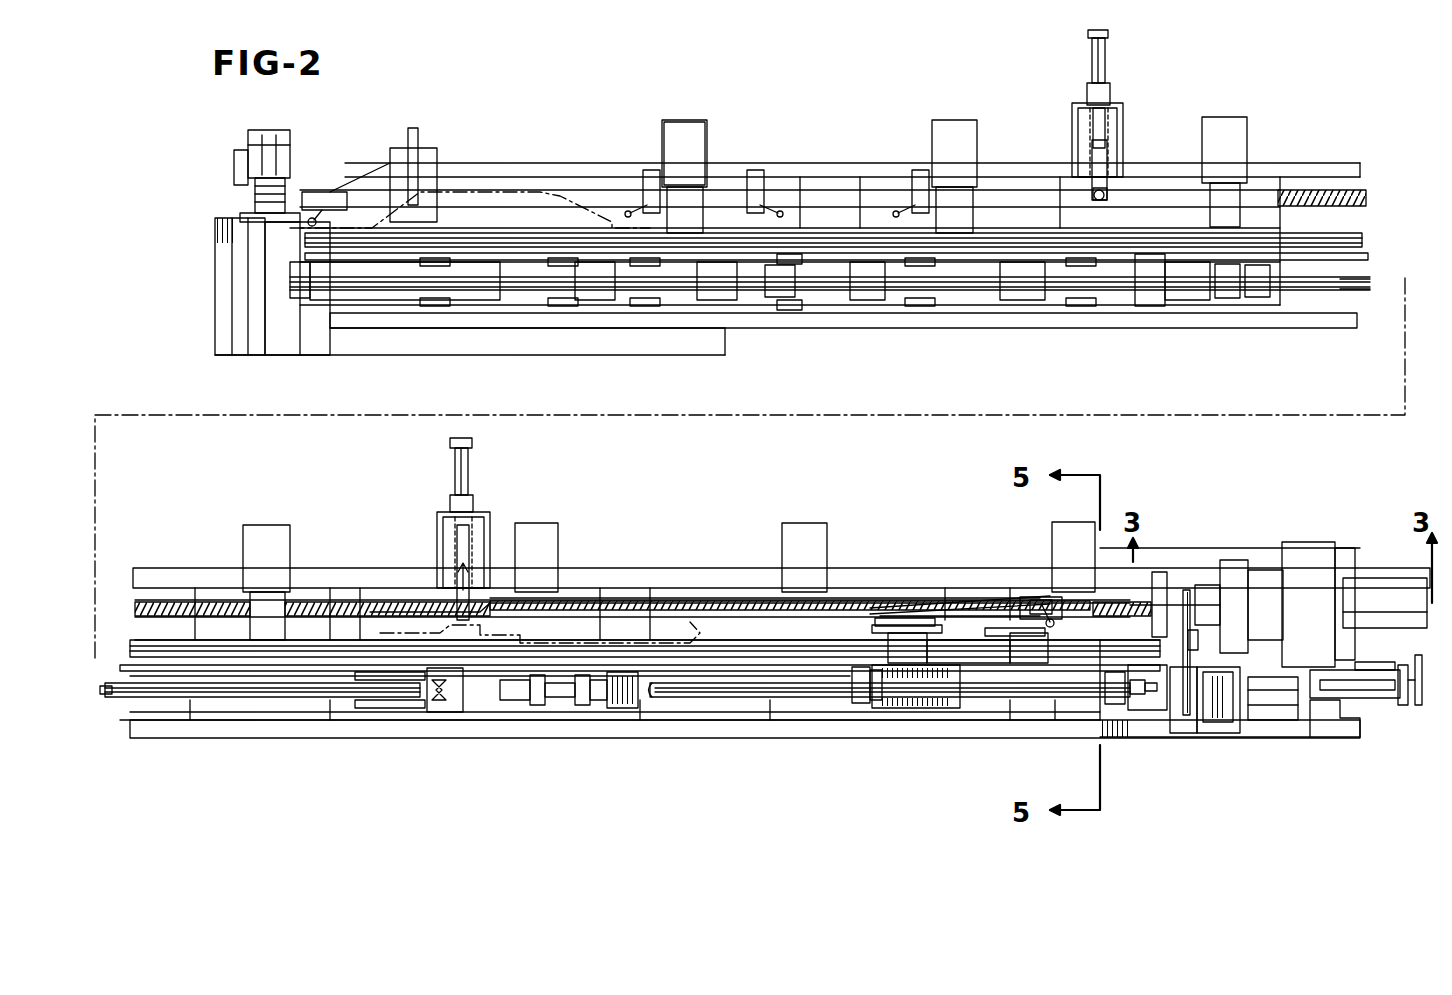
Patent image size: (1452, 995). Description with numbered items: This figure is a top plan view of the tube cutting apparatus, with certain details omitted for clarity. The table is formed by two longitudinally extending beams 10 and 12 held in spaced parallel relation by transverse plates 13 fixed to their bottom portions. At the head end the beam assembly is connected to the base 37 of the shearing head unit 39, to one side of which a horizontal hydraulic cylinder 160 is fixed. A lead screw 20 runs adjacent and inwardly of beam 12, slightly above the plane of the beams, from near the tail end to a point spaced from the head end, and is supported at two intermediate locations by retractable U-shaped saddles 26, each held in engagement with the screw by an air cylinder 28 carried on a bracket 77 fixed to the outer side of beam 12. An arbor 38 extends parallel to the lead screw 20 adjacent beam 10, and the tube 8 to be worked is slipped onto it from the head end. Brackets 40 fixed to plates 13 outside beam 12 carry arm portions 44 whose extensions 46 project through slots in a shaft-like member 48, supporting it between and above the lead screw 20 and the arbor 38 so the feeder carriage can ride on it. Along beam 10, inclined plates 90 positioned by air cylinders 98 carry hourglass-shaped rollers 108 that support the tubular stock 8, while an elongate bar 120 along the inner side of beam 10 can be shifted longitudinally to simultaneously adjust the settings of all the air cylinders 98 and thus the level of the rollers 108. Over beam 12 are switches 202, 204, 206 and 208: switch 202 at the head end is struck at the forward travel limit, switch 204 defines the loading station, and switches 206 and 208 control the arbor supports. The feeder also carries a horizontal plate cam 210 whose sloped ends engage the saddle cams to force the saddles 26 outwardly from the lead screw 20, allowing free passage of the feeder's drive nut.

The tube 8 is at (1355, 290).
The beam 10 is at (1333, 328).
The beam 12 is at (1333, 165).
The plates 13 is at (838, 190).
The lead screw 20 is at (1366, 190).
The saddle member 26 is at (1108, 198).
The air cylinder 28 is at (1092, 58).
The base 37 is at (310, 345).
The arbor 38 is at (1372, 282).
The shearing head unit 39 is at (243, 273).
The bracket 40 is at (676, 118).
The arm portion 44 is at (694, 155).
The bar-like extension 46 is at (694, 217).
The shaft-like member 48 is at (1362, 237).
The bracket 77 is at (1116, 126).
The plate 90 is at (1108, 300).
The air cylinder 98 is at (1200, 300).
The roller 108 is at (1078, 300).
The bar element 120 is at (1368, 257).
The hydraulic cylinder 160 is at (284, 153).
The control switch 202 is at (316, 192).
The switch 204 is at (652, 180).
The switch 206 is at (754, 172).
The switch 208 is at (920, 175).
The cam device 210 is at (540, 192).